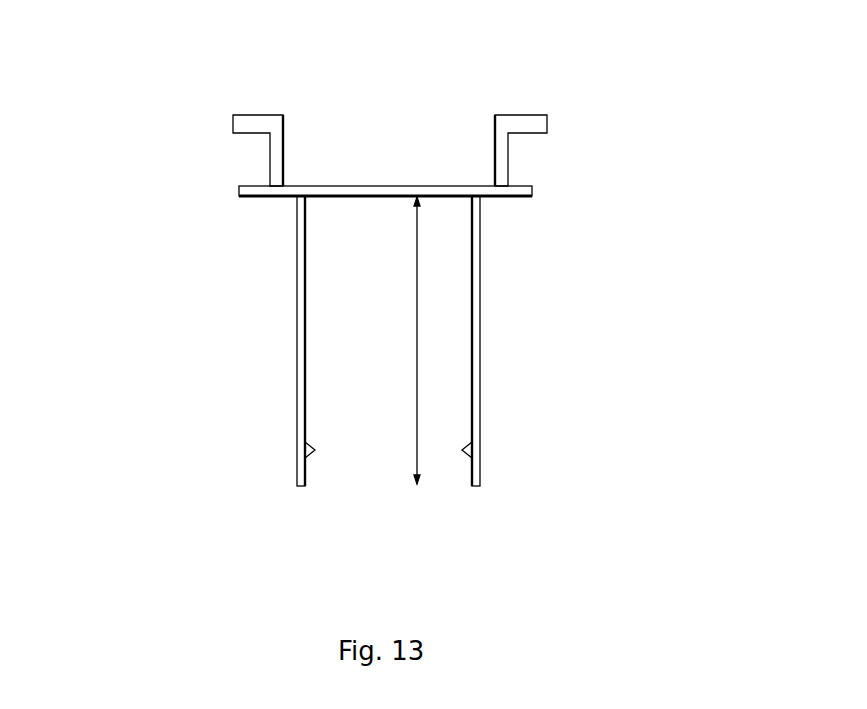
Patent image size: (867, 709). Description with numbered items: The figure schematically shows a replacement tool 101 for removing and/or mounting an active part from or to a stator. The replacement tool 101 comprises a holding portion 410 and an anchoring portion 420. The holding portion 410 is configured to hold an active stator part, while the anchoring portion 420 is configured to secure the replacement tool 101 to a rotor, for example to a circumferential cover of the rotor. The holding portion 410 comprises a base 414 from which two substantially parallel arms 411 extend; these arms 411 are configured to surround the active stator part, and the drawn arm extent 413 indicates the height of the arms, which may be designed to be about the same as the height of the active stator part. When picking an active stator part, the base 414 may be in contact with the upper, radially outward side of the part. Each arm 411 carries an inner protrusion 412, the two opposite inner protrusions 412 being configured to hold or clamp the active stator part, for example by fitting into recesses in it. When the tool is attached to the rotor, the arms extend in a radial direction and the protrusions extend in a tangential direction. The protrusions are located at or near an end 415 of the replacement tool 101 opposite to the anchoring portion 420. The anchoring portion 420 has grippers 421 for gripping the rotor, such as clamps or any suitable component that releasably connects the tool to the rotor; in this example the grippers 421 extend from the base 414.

The replacement tool 101 is at (163, 145).
The holding portion 410 is at (583, 200).
The arm 411 is at (300, 308).
The inner protrusion 412 is at (305, 445).
The leg length 413 is at (417, 252).
The base 414 is at (390, 185).
The end 415 is at (377, 498).
The anchoring portion 420 is at (592, 148).
The gripper 421 is at (257, 123).